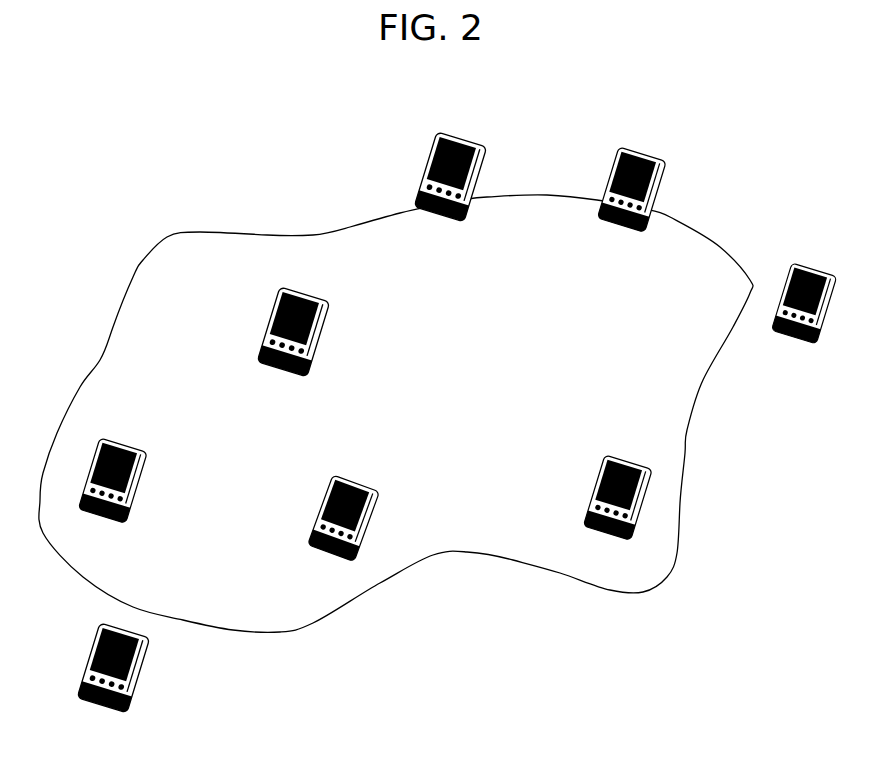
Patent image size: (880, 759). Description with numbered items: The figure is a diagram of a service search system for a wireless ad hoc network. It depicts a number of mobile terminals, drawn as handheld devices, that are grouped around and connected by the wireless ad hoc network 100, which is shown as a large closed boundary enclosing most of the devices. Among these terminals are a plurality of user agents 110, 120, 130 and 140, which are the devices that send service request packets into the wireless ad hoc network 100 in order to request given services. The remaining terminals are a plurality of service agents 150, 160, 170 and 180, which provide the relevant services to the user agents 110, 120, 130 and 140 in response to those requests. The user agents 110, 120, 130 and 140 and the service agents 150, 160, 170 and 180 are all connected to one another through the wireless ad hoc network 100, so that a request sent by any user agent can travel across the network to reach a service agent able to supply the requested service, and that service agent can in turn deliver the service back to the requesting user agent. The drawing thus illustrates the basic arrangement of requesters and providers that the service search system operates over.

The wireless ad hoc network 100 is at (670, 577).
The user agent 110 is at (147, 630).
The user agent 120 is at (107, 435).
The user agent 130 is at (378, 485).
The user agent 140 is at (285, 287).
The service agent 150 is at (630, 145).
The service agent 160 is at (650, 460).
The service agent 170 is at (442, 132).
The service agent 180 is at (797, 262).